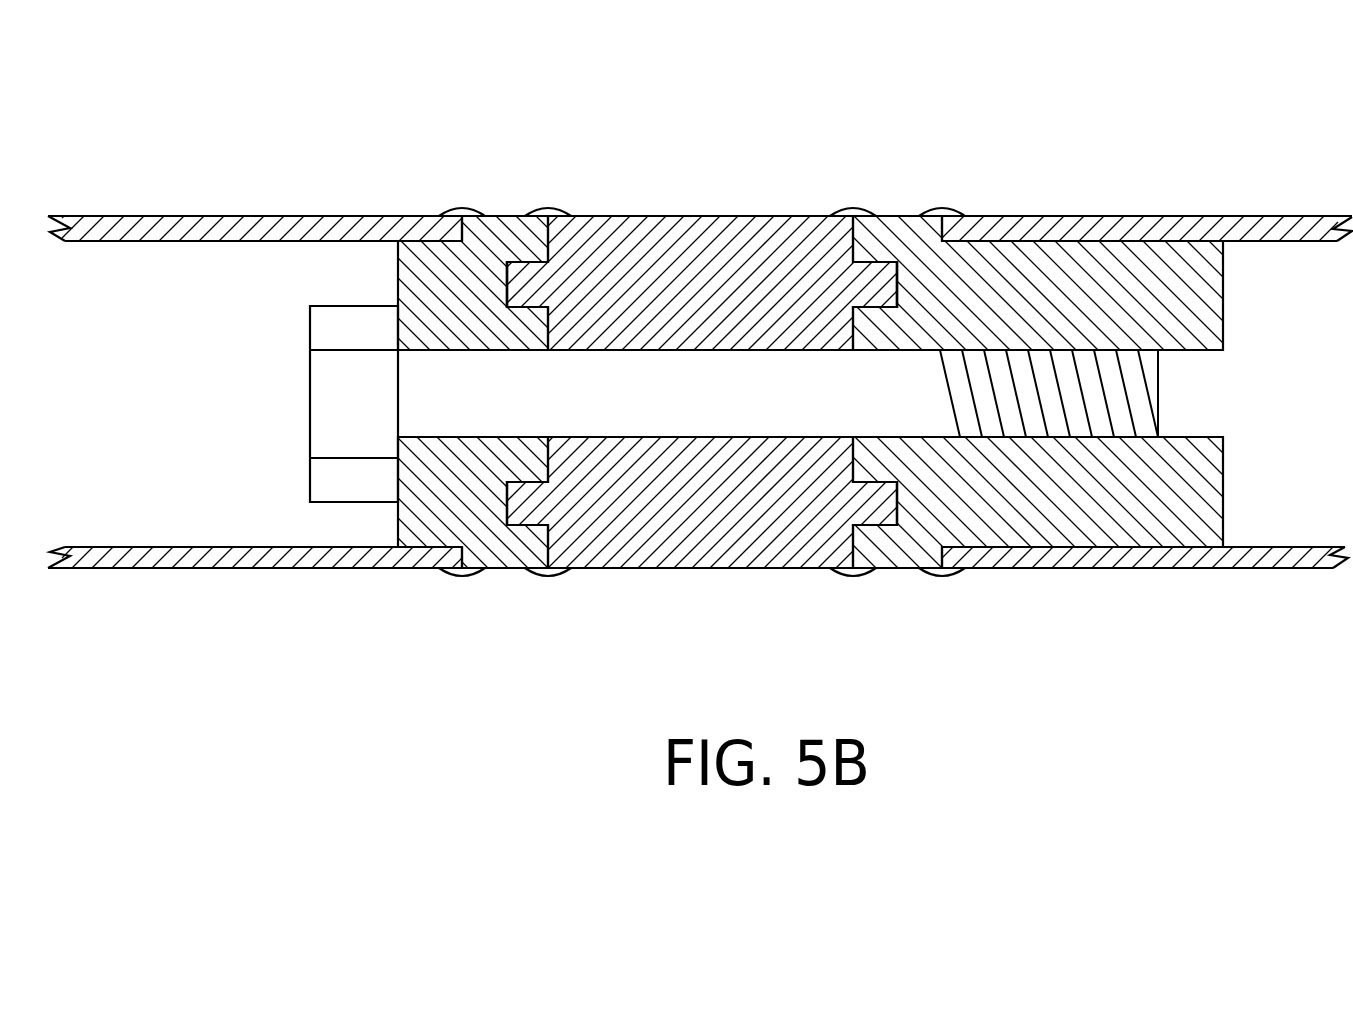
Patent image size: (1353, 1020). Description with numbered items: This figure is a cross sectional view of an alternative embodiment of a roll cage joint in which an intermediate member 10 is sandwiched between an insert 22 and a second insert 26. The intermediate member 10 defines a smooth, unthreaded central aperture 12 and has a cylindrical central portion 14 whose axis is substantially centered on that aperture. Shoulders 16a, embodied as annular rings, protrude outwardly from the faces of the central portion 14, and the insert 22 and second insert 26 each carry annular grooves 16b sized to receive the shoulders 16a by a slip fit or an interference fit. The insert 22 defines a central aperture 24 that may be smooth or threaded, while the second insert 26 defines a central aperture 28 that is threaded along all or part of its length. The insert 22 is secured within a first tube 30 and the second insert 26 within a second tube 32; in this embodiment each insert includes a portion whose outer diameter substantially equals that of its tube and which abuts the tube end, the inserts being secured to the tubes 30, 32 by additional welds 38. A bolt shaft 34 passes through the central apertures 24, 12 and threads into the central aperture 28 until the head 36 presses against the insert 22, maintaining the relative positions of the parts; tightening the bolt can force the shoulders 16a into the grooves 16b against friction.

The intermediate member 10 is at (673, 178).
The central aperture 12 is at (567, 434).
The central portion 14 is at (720, 232).
The shoulders 16a is at (895, 290).
The annular grooves 16b is at (497, 297).
The insert 22 is at (473, 243).
The central aperture 24 is at (505, 437).
The second insert 26 is at (1050, 260).
The central aperture 28 is at (1207, 437).
The first tube 30 is at (203, 226).
The second tube 32 is at (1167, 230).
The bolt shaft 34 is at (680, 418).
The head 36 is at (347, 351).
The welds 38 is at (447, 216).